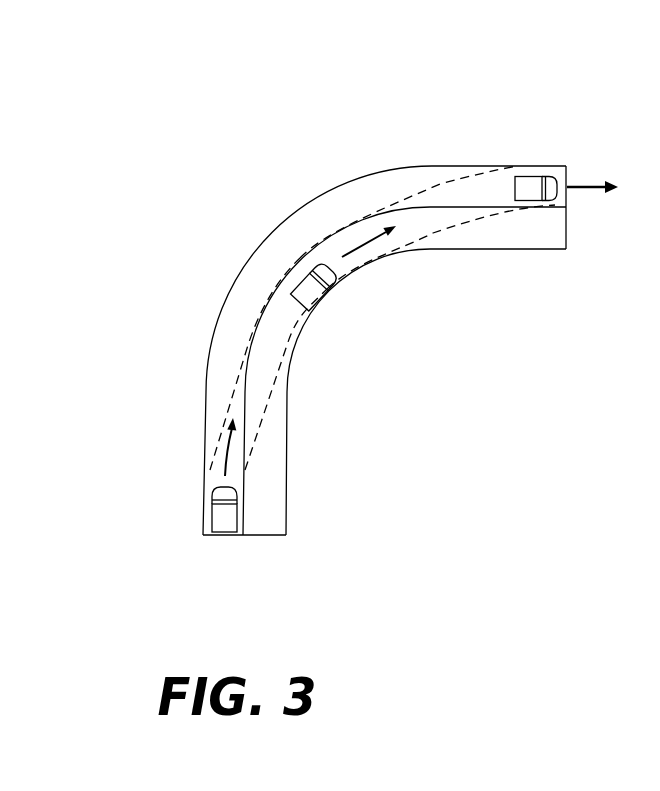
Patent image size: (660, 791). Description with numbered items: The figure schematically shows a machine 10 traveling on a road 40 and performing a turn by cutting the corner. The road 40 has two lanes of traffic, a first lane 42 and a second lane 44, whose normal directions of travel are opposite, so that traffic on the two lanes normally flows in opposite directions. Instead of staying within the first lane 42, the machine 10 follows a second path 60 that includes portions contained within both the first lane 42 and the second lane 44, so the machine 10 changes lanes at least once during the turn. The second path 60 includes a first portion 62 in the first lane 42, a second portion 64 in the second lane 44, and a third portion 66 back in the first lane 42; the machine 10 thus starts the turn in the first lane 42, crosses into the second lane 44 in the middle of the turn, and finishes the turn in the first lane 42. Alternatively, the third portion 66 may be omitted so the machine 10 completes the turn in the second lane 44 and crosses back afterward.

The machine 10 is at (212, 525).
The road 40 is at (280, 205).
The first lane 42 is at (225, 536).
The second lane 44 is at (264, 536).
The second path 60 is at (433, 242).
The first portion 62 is at (213, 455).
The second portion 64 is at (281, 328).
The third portion 66 is at (490, 182).